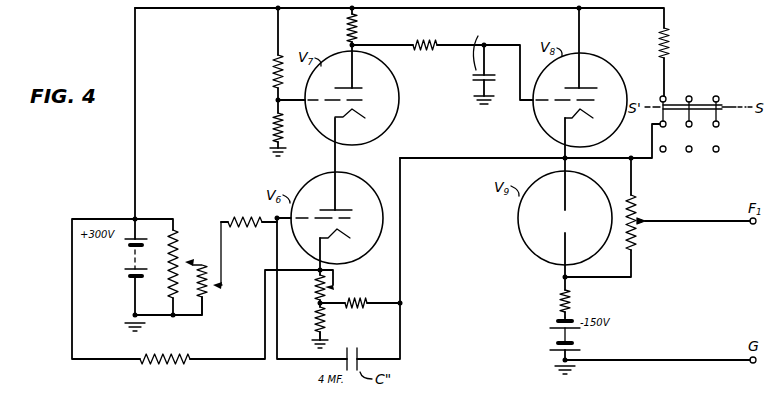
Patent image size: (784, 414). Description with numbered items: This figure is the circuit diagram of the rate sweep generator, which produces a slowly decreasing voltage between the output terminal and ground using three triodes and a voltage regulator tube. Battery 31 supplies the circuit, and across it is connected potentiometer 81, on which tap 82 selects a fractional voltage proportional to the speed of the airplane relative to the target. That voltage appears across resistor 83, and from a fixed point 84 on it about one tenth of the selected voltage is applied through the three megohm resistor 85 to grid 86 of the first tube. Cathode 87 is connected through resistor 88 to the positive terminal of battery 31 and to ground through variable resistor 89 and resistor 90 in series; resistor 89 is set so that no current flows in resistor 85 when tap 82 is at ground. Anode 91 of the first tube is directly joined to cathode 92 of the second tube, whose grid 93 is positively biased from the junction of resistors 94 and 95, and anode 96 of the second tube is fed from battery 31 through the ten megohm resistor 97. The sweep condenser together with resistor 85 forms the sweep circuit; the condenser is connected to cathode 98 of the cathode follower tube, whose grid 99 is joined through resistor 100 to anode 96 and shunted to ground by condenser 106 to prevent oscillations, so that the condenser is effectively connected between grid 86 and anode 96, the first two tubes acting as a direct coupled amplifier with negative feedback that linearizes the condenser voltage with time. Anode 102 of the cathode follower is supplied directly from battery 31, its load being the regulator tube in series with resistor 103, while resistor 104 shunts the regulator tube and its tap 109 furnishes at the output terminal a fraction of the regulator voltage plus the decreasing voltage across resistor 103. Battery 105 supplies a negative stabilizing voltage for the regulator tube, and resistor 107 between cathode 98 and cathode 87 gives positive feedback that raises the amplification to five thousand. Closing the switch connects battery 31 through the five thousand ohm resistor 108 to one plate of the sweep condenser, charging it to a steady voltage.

The battery 31 is at (131, 262).
The potentiometer 81 is at (180, 243).
The tap 82 is at (188, 263).
The resistor 83 is at (204, 298).
The fixed point 84 is at (220, 290).
The 3 megohm resistor 85 is at (238, 216).
The grid 86 is at (350, 219).
The cathode 87 is at (314, 239).
The resistor 88 is at (179, 357).
The variable resistor 89 is at (316, 298).
The resistor 90 is at (322, 331).
The anode 91 is at (352, 205).
The cathode 92 is at (338, 120).
The grid 93 is at (362, 102).
The resistor 94 is at (275, 118).
The resistor 95 is at (276, 59).
The anode 96 is at (362, 88).
The 10-megohm resistor 97 is at (348, 33).
The cathode 98 is at (566, 115).
The grid 99 is at (594, 104).
The resistor 100 is at (430, 50).
The anode 102 is at (597, 86).
The resistor 103 is at (558, 292).
The resistor 104 is at (640, 204).
The battery 105 is at (576, 337).
The condenser 106 is at (476, 82).
The resistor 107 is at (360, 297).
The 5,000 ohm resistor 108 is at (660, 40).
The tap 109 is at (648, 218).